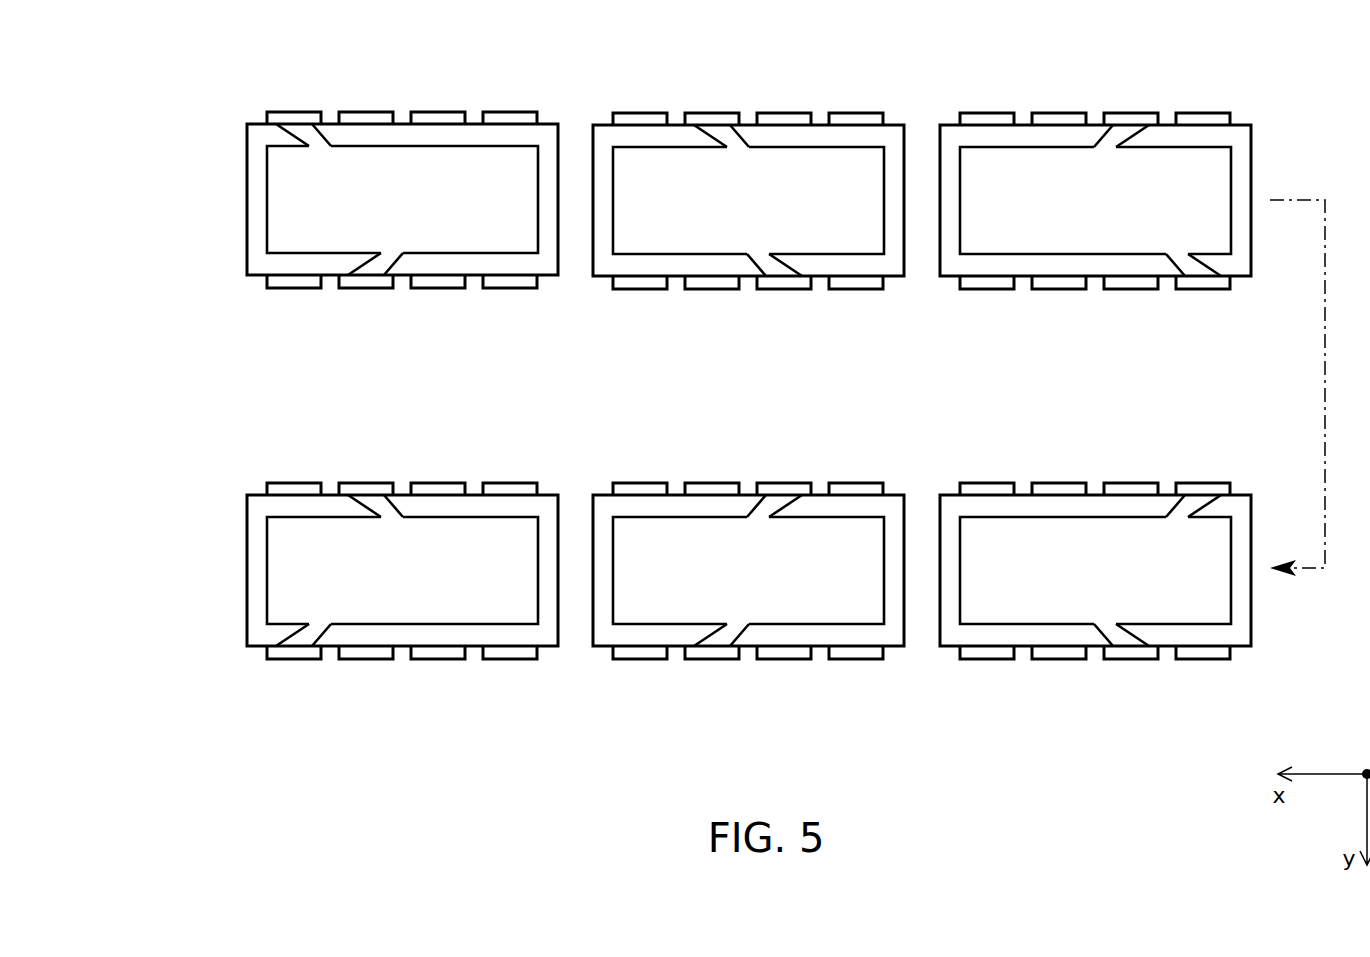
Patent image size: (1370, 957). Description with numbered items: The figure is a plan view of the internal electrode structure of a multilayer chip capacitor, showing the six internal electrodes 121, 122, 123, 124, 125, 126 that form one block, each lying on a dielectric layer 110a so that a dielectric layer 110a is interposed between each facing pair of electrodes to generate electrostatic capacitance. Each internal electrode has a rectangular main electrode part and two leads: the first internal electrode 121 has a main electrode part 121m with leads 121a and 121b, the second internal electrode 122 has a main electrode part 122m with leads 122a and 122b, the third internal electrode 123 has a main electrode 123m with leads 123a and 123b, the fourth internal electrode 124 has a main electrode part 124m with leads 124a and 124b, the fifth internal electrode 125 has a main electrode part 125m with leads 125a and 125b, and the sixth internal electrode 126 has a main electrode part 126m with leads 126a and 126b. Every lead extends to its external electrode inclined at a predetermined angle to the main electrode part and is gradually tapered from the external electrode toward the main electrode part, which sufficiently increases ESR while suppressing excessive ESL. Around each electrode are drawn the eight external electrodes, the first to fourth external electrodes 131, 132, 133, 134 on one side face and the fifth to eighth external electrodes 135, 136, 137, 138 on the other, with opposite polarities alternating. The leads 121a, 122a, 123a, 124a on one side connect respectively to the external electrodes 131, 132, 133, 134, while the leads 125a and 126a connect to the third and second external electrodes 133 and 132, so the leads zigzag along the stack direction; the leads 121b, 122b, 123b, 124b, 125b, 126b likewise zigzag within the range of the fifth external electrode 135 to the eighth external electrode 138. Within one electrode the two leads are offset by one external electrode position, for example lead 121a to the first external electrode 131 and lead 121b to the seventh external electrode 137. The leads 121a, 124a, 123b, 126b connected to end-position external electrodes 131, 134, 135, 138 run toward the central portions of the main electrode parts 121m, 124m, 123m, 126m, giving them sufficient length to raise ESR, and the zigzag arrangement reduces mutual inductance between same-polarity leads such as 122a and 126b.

The dielectric layer 110a is at (252, 224).
The first internal electrode 121 is at (298, 209).
The lead 121a is at (292, 133).
The lead 121b is at (375, 258).
The main electrode part 121m is at (478, 238).
The second internal electrode 122 is at (822, 165).
The lead 122a is at (735, 141).
The lead 122b is at (758, 264).
The main electrode part 122m is at (855, 243).
The third internal electrode 123 is at (1172, 165).
The lead 123a is at (1102, 134).
The lead 123b is at (1183, 263).
The main electrode 123m is at (1053, 238).
The fourth internal electrode 124 is at (1113, 540).
The lead 124a is at (1171, 508).
The lead 124b is at (1110, 633).
The main electrode part 124m is at (1207, 612).
The fifth internal electrode 125 is at (825, 537).
The lead 125a is at (757, 507).
The lead 125b is at (730, 634).
The main electrode part 125m is at (850, 607).
The sixth internal electrode 126 is at (297, 583).
The lead 126a is at (388, 508).
The lead 126b is at (313, 634).
The main electrode part 126m is at (470, 600).
The first external electrode 131 is at (293, 111).
The second external electrode 132 is at (366, 111).
The third external electrode 133 is at (436, 111).
The fourth external electrode 134 is at (508, 111).
The fifth external electrode 135 is at (508, 289).
The sixth external electrode 136 is at (436, 289).
The seventh external electrode 137 is at (366, 289).
The eighth external electrode 138 is at (293, 289).